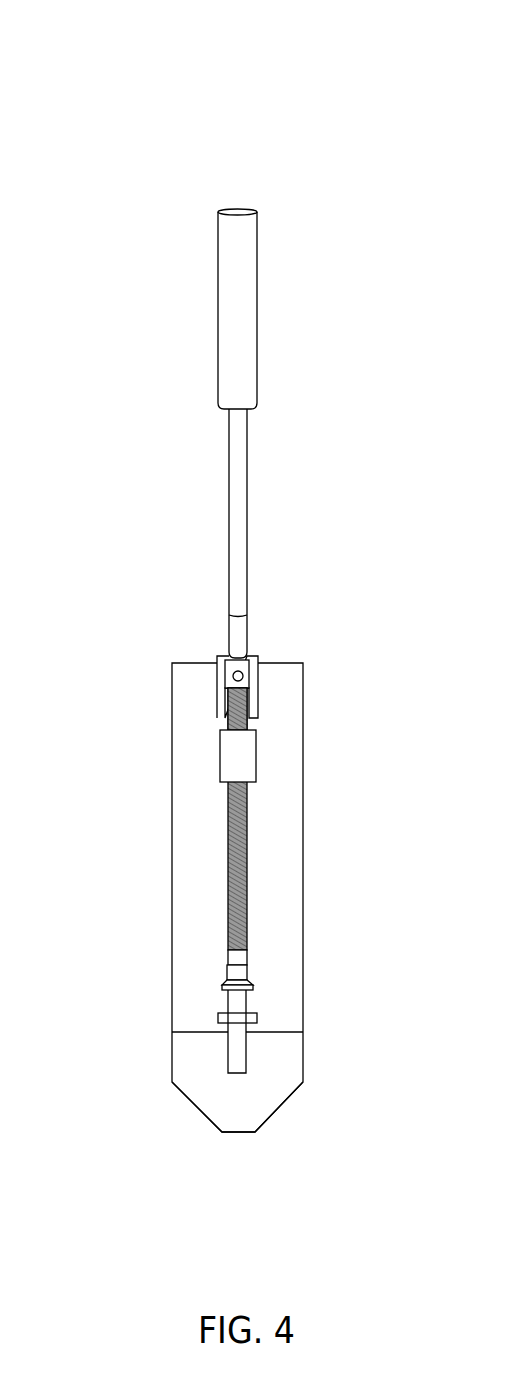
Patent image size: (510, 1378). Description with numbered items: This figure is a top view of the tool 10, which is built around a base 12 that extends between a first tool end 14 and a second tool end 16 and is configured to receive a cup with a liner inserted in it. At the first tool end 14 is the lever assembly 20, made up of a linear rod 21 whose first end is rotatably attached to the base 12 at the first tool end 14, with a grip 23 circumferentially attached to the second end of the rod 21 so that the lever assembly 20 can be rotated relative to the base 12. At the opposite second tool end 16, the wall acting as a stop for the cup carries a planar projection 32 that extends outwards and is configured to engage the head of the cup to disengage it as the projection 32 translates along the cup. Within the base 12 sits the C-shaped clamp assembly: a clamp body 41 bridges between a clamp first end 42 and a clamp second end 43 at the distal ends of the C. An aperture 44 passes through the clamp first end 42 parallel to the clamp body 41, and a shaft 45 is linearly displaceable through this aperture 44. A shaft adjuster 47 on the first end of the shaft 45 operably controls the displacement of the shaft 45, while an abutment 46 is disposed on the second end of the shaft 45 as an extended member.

The tool 10 is at (110, 183).
The lever assembly 20 is at (197, 330).
The grip 23 is at (248, 308).
The linear rod 21 is at (247, 502).
The first tool end 14 is at (278, 660).
The shaft adjuster 47 is at (230, 672).
The aperture 44 is at (222, 728).
The clamp first end 42 is at (223, 768).
The base 12 is at (287, 833).
The shaft 45 is at (227, 882).
The abutment 46 is at (227, 975).
The clamp body 41 is at (243, 995).
The clamp second end 43 is at (220, 1012).
The second tool end 16 is at (295, 1031).
The planar projection 32 is at (273, 1113).